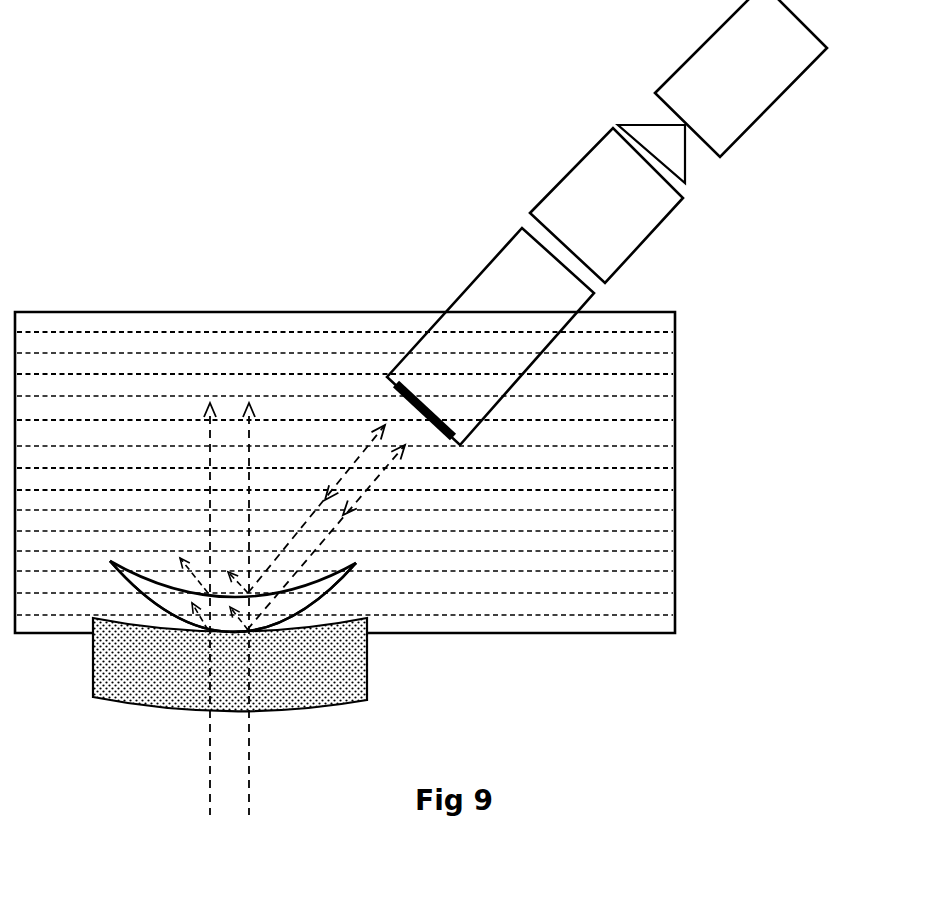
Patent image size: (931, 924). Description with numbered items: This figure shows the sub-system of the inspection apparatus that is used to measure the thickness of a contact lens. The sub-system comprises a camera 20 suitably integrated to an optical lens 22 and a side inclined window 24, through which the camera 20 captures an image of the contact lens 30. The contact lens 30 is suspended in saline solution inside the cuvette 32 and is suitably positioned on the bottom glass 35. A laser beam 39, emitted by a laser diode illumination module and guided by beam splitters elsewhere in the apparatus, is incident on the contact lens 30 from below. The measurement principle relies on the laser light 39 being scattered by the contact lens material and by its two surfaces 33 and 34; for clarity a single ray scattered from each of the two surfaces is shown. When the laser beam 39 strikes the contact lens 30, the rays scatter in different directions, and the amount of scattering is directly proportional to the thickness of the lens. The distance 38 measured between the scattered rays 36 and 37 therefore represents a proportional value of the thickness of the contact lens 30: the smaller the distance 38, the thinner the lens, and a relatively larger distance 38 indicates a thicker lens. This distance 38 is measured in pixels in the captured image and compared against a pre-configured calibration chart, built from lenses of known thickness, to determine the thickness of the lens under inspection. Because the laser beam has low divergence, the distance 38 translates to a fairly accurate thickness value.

The camera 20 is at (747, 107).
The optical lens 22 is at (640, 223).
The side inclined window 24 is at (580, 290).
The contact lens 30 is at (322, 610).
The cuvette 32 is at (675, 598).
The contact lens surface 33 is at (108, 580).
The contact lens surface 34 is at (147, 579).
The bottom glass 35 is at (148, 693).
The scattered ray 36 is at (357, 467).
The scattered ray 37 is at (360, 498).
The distance 38 is at (343, 514).
The laser beam 39 is at (220, 782).